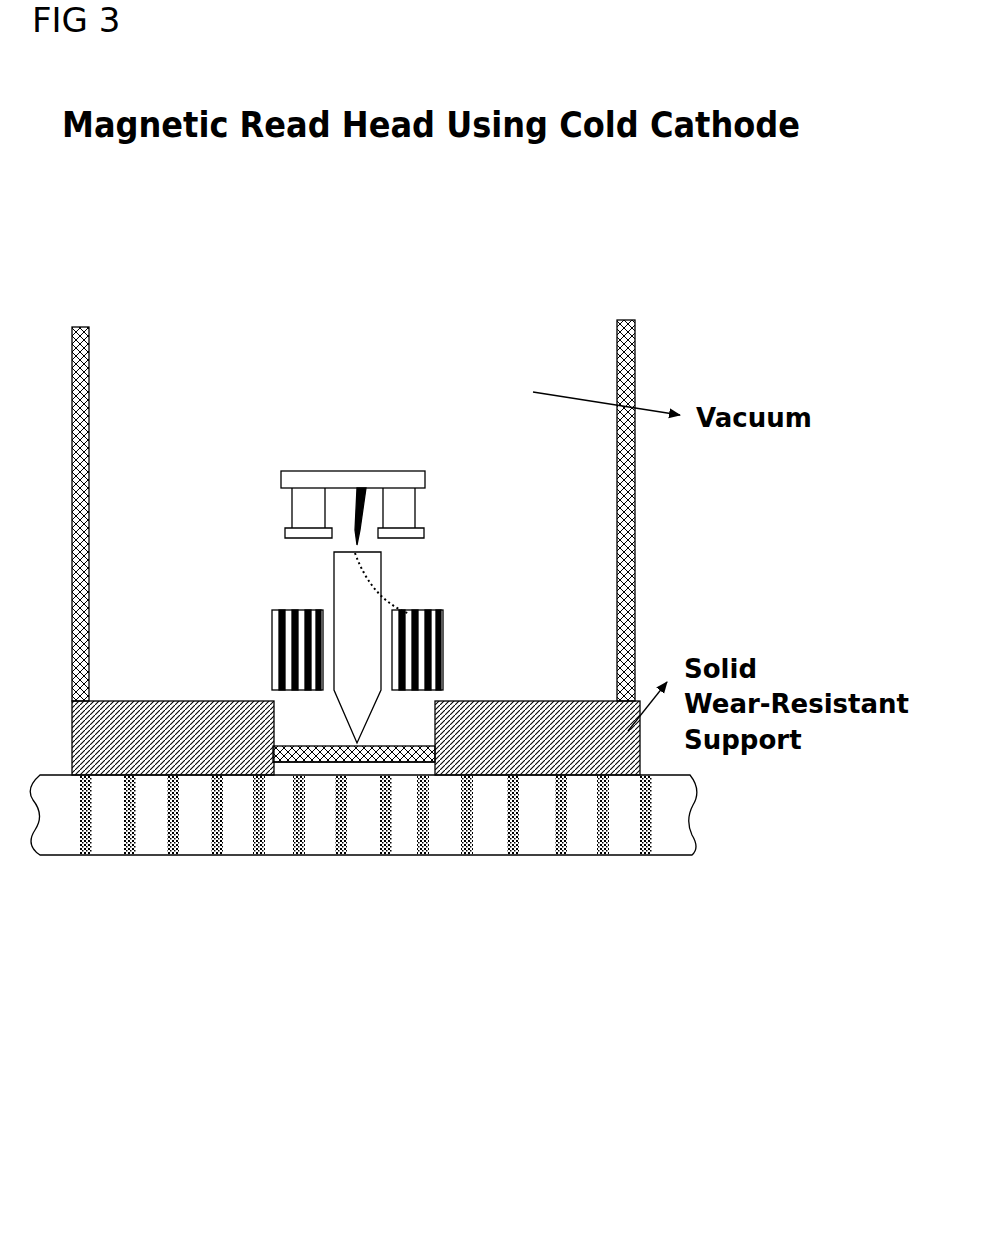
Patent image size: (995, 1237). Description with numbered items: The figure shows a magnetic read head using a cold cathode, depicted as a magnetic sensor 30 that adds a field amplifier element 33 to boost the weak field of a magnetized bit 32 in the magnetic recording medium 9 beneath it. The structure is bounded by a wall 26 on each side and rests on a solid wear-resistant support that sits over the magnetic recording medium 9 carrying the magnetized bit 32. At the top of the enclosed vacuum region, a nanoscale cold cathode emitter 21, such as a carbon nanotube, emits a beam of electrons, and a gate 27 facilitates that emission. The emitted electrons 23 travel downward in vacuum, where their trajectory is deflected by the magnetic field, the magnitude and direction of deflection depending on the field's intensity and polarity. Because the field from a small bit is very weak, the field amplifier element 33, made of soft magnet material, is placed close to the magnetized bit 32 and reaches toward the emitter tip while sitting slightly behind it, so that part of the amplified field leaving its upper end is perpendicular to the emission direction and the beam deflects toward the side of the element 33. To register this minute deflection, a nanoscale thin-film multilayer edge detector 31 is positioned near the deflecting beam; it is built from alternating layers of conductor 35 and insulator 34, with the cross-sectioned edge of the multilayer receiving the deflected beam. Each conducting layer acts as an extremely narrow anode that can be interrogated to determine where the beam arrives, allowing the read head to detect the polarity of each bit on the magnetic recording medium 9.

The magnetic sensor 30 is at (36, 293).
The wall 26 is at (92, 378).
The cold cathode emitter 21 is at (361, 489).
The gate 27 is at (283, 532).
The emitted electrons 23 is at (378, 570).
The thin-film multilayer edge detector 31 is at (443, 635).
The field amplifier element 33 is at (350, 684).
The insulator 34 is at (276, 606).
The conductor 35 is at (287, 606).
The magnetized bit 32 is at (452, 871).
The magnetic recording medium 9 is at (427, 923).